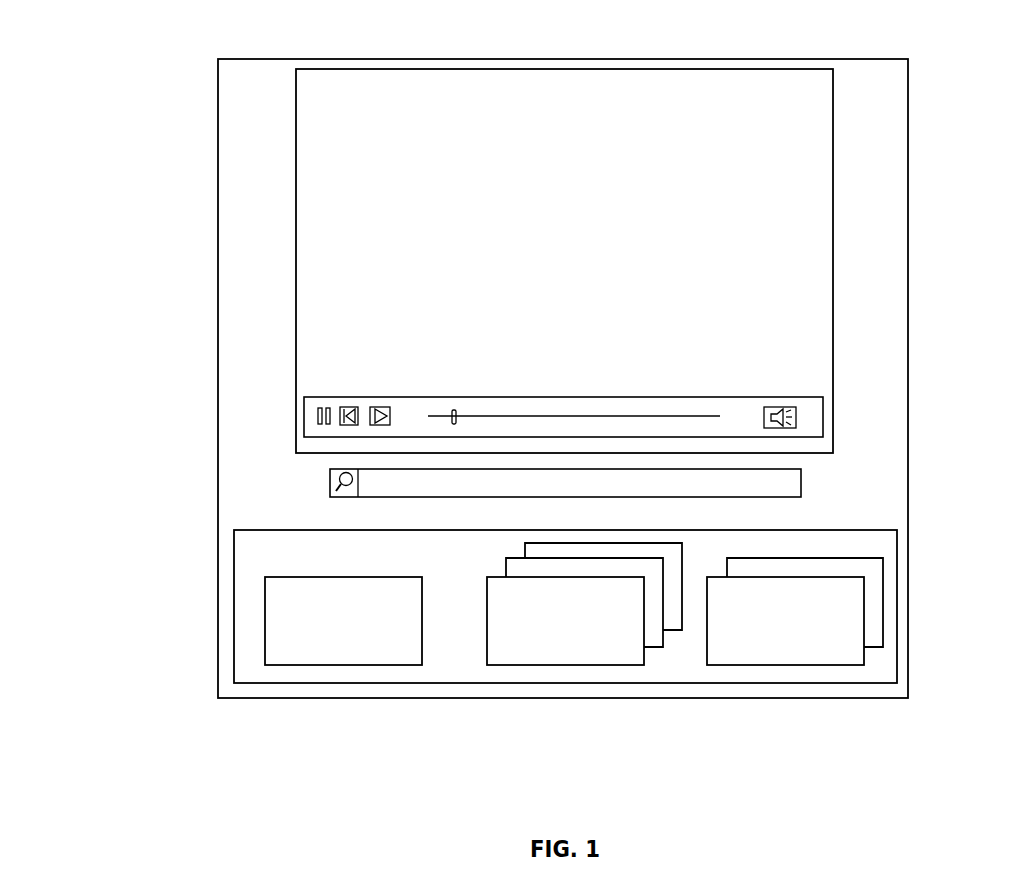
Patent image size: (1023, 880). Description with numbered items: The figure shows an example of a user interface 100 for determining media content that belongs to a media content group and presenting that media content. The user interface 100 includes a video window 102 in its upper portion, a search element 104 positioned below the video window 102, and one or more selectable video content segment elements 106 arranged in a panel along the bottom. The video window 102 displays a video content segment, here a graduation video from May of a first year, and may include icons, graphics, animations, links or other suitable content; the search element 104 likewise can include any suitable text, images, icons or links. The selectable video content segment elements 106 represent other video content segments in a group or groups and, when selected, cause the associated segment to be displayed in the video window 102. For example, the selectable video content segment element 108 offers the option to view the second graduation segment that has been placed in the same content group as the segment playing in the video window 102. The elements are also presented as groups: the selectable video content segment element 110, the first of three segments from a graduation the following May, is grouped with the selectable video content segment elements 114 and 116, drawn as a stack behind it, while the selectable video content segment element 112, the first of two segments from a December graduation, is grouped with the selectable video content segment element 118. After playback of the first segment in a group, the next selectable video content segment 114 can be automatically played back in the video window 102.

The user interface 100 is at (582, 29).
The video window 102 is at (296, 232).
The search element 104 is at (330, 477).
The selectable video content segment elements 106 is at (250, 598).
The selectable video content segment element 108 is at (310, 665).
The selectable video content segment element 110 is at (527, 665).
The selectable video content segment element 112 is at (753, 665).
The selectable video content segment element 114 is at (682, 543).
The selectable video content segment element 116 is at (663, 558).
The selectable video content segment element 118 is at (883, 601).